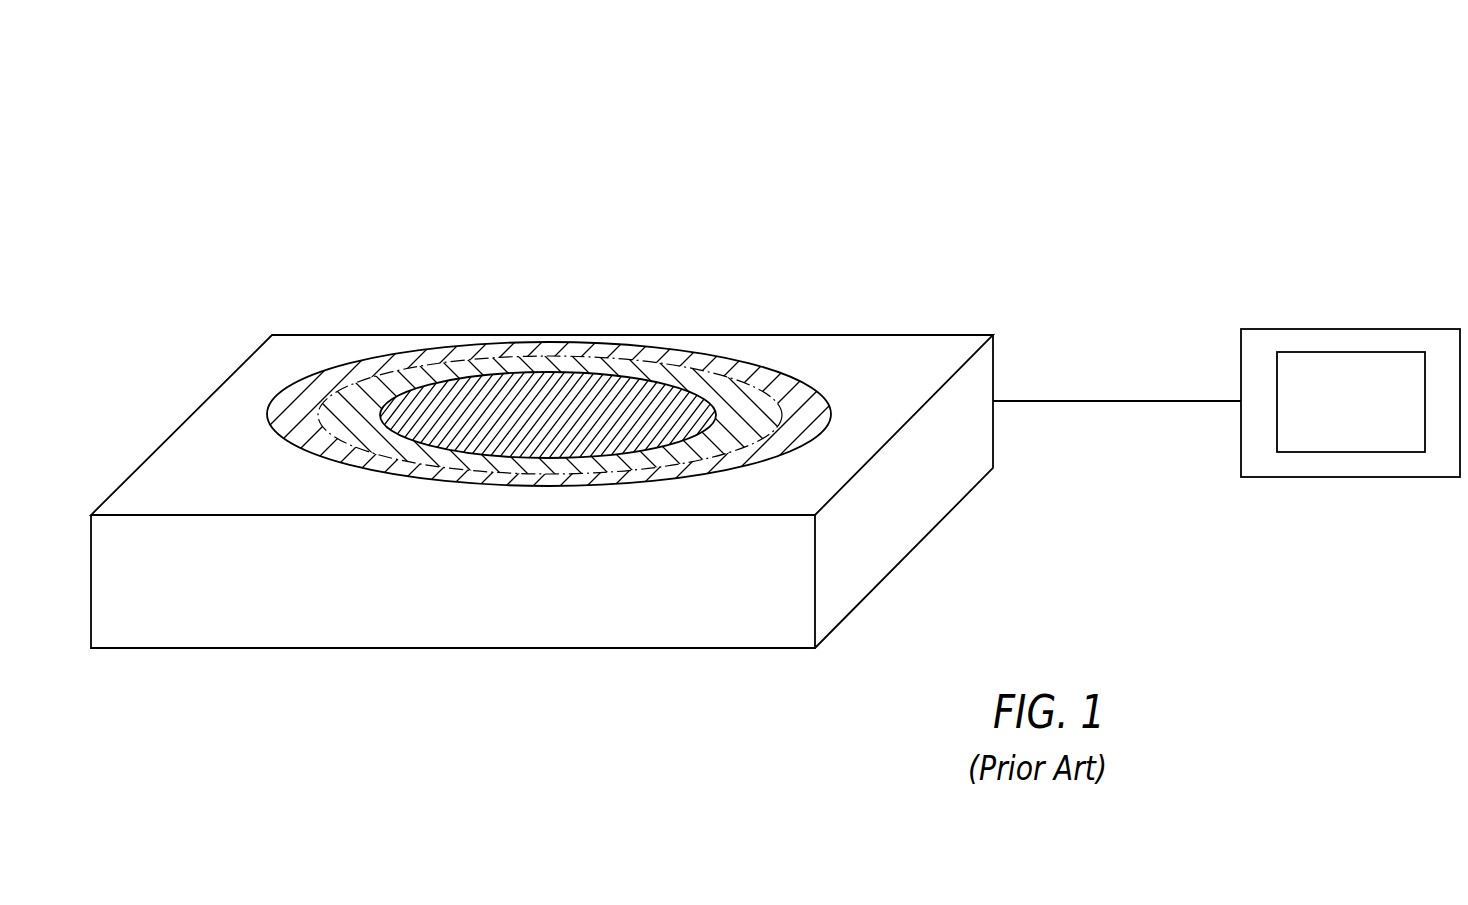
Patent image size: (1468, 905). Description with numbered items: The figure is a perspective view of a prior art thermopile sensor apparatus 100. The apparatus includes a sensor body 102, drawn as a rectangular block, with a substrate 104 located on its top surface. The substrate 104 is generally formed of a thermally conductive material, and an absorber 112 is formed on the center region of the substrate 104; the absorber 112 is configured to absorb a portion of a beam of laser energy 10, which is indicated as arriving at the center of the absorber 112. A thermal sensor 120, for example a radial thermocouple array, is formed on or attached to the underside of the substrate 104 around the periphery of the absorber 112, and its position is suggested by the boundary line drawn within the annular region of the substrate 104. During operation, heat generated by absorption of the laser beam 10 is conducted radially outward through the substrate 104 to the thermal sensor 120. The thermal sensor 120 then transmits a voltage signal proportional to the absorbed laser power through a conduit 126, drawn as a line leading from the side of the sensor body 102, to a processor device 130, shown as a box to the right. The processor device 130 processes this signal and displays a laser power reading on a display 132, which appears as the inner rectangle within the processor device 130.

The thermopile sensor apparatus 100 is at (281, 198).
The sensor body 102 is at (206, 398).
The substrate 104 is at (388, 368).
The thermal sensor 120 is at (502, 365).
The absorber 112 is at (618, 378).
The beam of laser energy 10 is at (550, 396).
The conduit 126 is at (1117, 401).
The processor device 130 is at (1350, 329).
The display 132 is at (1313, 352).